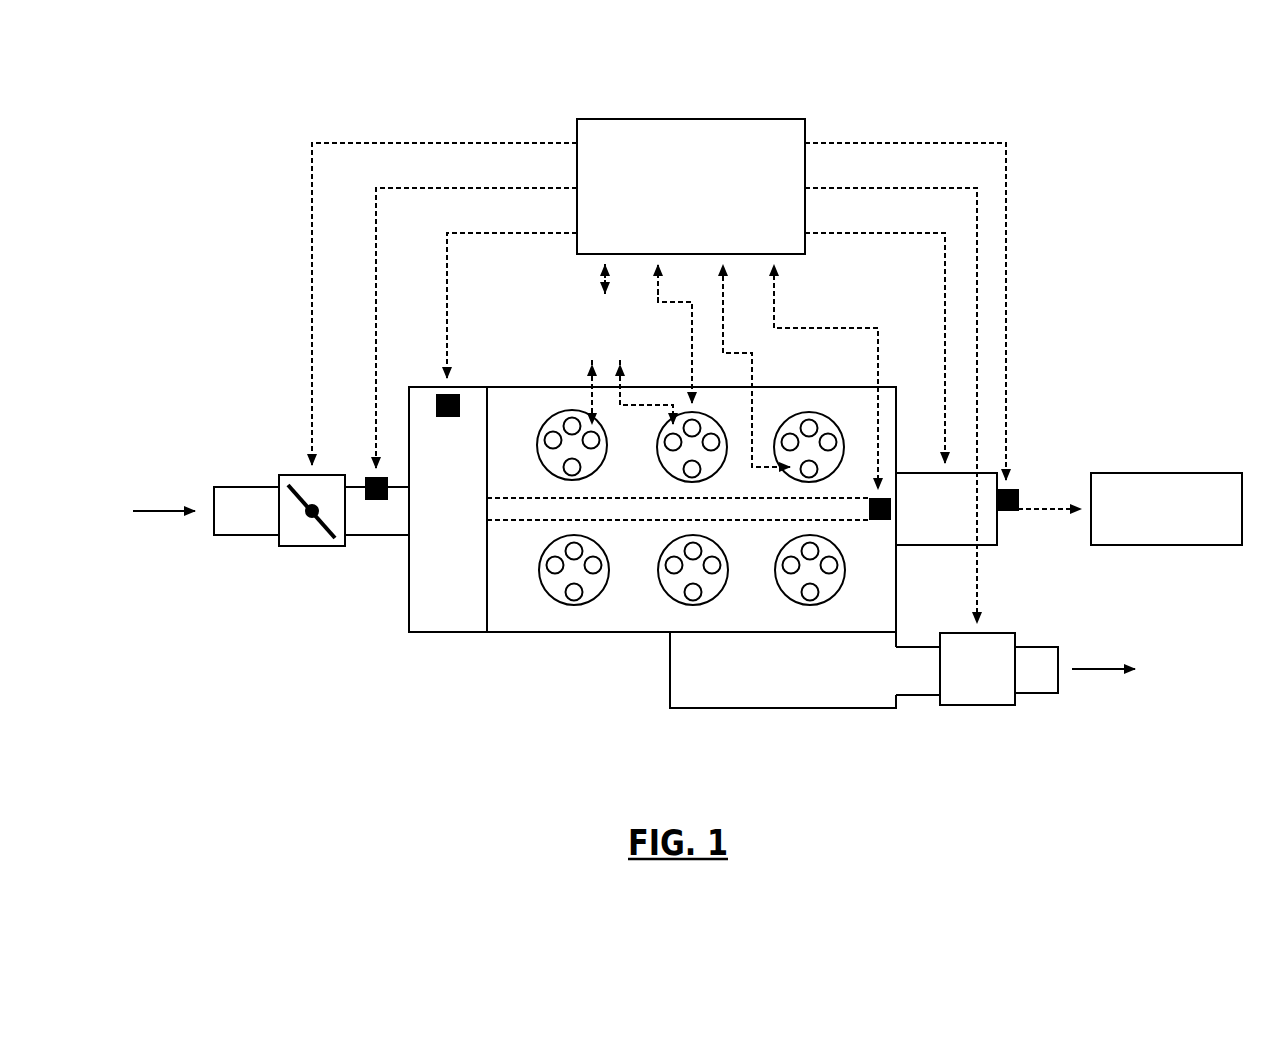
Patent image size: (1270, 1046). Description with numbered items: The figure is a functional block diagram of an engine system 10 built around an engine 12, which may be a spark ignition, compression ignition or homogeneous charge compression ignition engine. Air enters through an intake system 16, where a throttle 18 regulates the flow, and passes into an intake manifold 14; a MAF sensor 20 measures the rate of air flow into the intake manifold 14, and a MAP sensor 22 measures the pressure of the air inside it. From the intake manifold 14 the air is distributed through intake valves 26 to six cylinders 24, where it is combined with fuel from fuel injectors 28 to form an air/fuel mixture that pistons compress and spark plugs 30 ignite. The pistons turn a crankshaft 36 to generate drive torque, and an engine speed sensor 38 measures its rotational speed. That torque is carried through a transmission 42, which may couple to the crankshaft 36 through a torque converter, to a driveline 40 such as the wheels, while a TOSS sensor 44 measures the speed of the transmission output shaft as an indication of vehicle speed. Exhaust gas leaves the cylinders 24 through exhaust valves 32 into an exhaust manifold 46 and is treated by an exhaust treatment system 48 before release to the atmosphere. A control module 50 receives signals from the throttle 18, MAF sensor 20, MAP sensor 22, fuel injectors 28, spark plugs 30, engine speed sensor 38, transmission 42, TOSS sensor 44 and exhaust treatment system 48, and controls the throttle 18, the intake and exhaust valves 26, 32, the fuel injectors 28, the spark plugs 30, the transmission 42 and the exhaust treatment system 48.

The engine system 10 is at (232, 89).
The engine 12 is at (618, 632).
The intake manifold 14 is at (452, 632).
The intake system 16 is at (246, 487).
The throttle 18 is at (312, 546).
The mass air flow (MAF) sensor 20 is at (376, 499).
The intake manifold absolute pressure (MAP) sensor 22 is at (447, 416).
The cylinders 24 is at (553, 600).
The intake valves 26 is at (550, 563).
The fuel injectors 28 is at (790, 560).
The spark plugs 30 is at (808, 600).
The exhaust valves 32 is at (600, 568).
The crankshaft 36 is at (678, 511).
The engine speed sensor 38 is at (880, 519).
The driveline 40 is at (1168, 473).
The transmission 42 is at (947, 545).
The transmission output shaft speed (TOSS) sensor 44 is at (1007, 510).
The exhaust manifold 46 is at (783, 708).
The exhaust treatment system 48 is at (977, 705).
The control module 50 is at (693, 119).